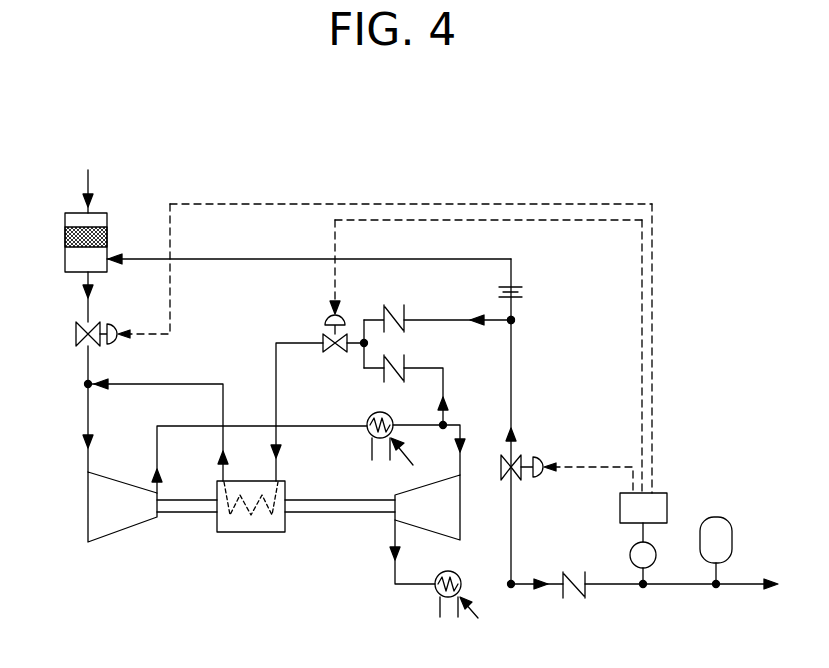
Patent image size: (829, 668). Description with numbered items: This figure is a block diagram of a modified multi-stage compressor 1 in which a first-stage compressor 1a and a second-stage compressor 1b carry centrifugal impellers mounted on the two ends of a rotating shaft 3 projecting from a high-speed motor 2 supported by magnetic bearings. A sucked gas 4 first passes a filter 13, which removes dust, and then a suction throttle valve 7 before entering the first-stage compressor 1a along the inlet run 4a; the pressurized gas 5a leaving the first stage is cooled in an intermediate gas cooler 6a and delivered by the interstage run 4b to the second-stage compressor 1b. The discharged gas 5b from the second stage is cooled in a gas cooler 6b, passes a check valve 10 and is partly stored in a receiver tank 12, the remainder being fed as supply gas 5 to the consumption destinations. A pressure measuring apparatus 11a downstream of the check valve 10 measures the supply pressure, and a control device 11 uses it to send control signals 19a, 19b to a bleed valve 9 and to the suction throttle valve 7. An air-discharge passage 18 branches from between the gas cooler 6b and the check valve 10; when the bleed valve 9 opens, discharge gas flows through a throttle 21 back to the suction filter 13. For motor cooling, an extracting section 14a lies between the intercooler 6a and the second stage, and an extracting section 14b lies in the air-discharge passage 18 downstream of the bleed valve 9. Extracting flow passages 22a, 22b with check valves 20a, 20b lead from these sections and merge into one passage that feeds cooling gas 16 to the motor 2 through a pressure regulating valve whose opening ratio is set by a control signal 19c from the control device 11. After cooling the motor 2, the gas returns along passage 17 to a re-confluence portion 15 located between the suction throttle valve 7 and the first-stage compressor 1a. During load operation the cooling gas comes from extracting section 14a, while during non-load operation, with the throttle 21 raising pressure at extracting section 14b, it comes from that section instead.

The multi-stage compressor 1 is at (489, 202).
The first-stage compressor 1a is at (87, 540).
The second-stage compressor 1b is at (456, 497).
The motor 2 is at (222, 535).
The rotating shaft 3 is at (168, 514).
The sucked gas 4 is at (90, 182).
The fuel line section 4a is at (85, 447).
The fuel line section to turbine 4b is at (467, 447).
The exhaust line 5 is at (752, 590).
The compressor discharge line 5a is at (155, 464).
The discharged gas 5b is at (388, 557).
The intermediate gas cooler 6a is at (381, 412).
The gas cooler 6b is at (437, 595).
The suction throttle valve 7 is at (76, 334).
The bleed valve 9 is at (516, 481).
The check valve 10 is at (579, 598).
The control device 11 is at (668, 505).
The pressure measuring apparatus 11a is at (630, 556).
The receiver tank 12 is at (714, 517).
The filter 13 is at (65, 224).
The extracting section 14a is at (426, 459).
The extracting section 14b is at (515, 320).
The re-confluence portion 15 is at (85, 386).
The cooling gas 16 is at (279, 452).
The line 17 is at (220, 456).
The air-discharge passage 18 is at (514, 403).
The control signal 19a is at (617, 467).
The control signal 19b is at (654, 398).
The control signal 19c is at (654, 258).
The check valve 20a is at (398, 380).
The check valve 20b is at (405, 333).
The throttle 21 is at (323, 340).
The extracting flow passage 22a is at (445, 403).
The extracting flow passage 22b is at (469, 316).